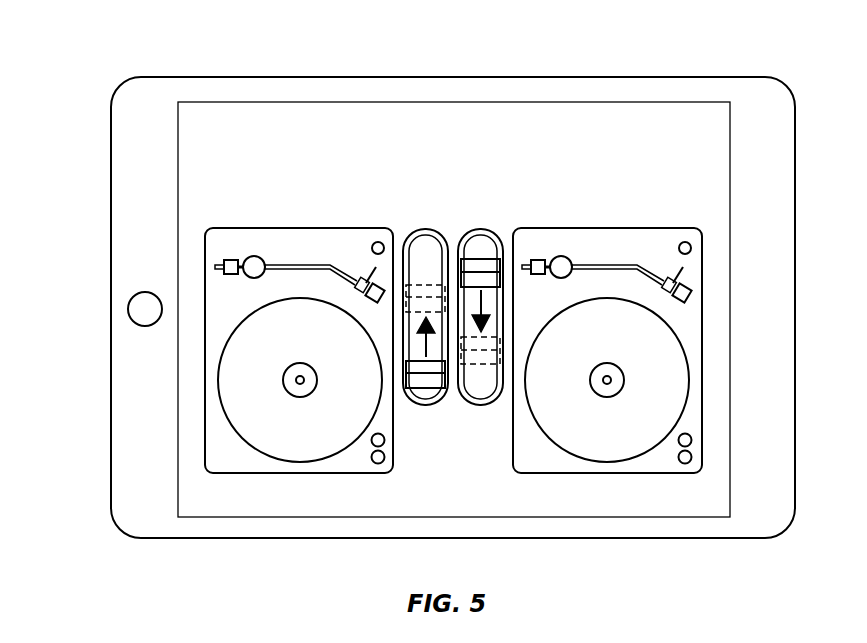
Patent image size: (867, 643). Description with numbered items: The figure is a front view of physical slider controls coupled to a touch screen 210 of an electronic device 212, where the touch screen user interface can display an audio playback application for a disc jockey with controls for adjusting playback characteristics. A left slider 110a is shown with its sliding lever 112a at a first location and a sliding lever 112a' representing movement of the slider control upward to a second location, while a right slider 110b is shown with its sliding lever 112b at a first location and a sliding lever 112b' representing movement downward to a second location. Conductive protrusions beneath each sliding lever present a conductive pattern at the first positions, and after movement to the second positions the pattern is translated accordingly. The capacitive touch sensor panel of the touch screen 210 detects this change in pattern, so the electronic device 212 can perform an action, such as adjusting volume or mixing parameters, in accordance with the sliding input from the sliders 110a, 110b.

The touch screen 210 is at (235, 167).
The electronic device 212 is at (111, 250).
The left slider 110a is at (371, 335).
The right slider 110b is at (527, 325).
The sliding lever 112a is at (429, 411).
The sliding lever 112a' is at (367, 307).
The sliding lever 112b is at (528, 280).
The sliding lever 112b' is at (481, 414).